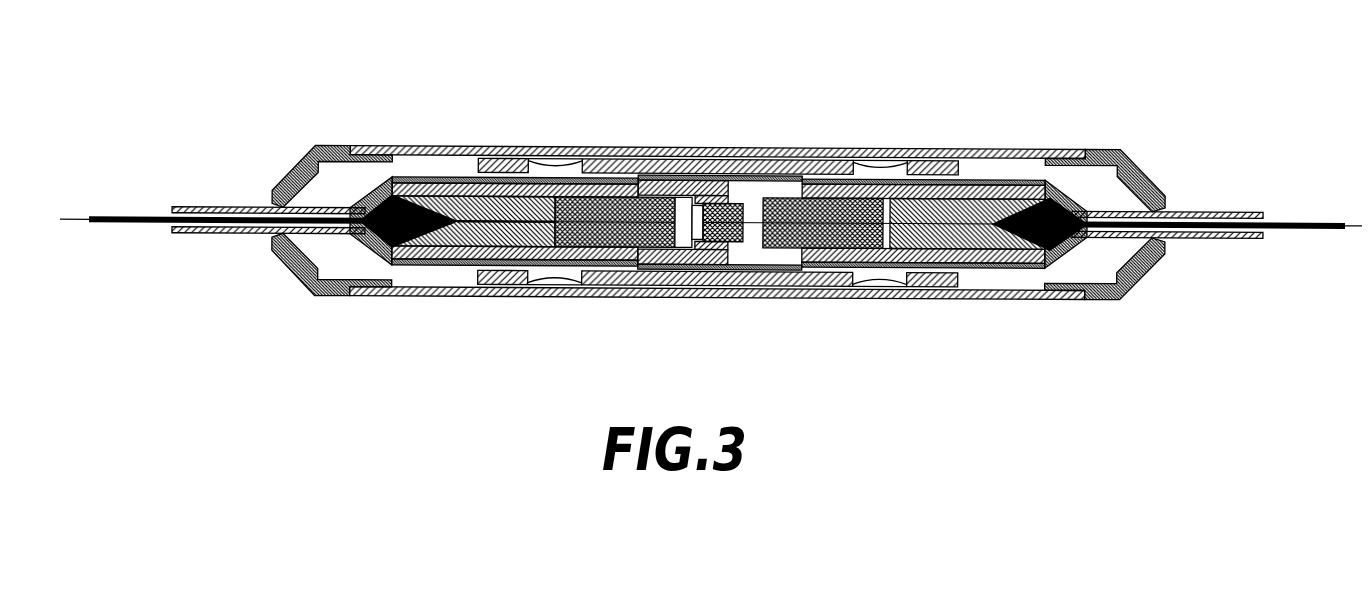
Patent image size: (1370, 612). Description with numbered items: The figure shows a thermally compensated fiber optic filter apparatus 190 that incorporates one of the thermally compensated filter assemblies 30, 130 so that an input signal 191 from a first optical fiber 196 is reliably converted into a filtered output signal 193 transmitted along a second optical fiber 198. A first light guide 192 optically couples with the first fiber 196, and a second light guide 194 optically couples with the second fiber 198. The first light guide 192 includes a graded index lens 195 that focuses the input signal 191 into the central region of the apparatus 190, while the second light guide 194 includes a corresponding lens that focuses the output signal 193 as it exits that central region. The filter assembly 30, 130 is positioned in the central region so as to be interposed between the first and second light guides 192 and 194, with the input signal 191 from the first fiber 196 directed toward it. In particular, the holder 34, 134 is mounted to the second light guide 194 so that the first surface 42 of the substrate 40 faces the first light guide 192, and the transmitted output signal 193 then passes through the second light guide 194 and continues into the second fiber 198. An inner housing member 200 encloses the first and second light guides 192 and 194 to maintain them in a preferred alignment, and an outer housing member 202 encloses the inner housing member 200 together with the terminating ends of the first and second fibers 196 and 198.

The thermally compensated fiber optic filter apparatus 190 is at (808, 70).
The input signal 191 is at (1358, 223).
The first light guide 192 is at (976, 300).
The filtered output signal 193 is at (70, 217).
The second light guide 194 is at (437, 268).
The graded index lens 195 is at (607, 177).
The first optical fiber 196 is at (1303, 232).
The second optical fiber 198 is at (113, 218).
The inner housing member 200 is at (651, 292).
The outer housing member 202 is at (394, 148).
The thermally compensated filter assembly 30 is at (718, 163).
The thermally compensated filter assembly 130 is at (735, 200).
The holder 34 is at (718, 156).
The holder 134 is at (660, 178).
The substrate 40 is at (743, 205).
The first surface 42 is at (745, 238).